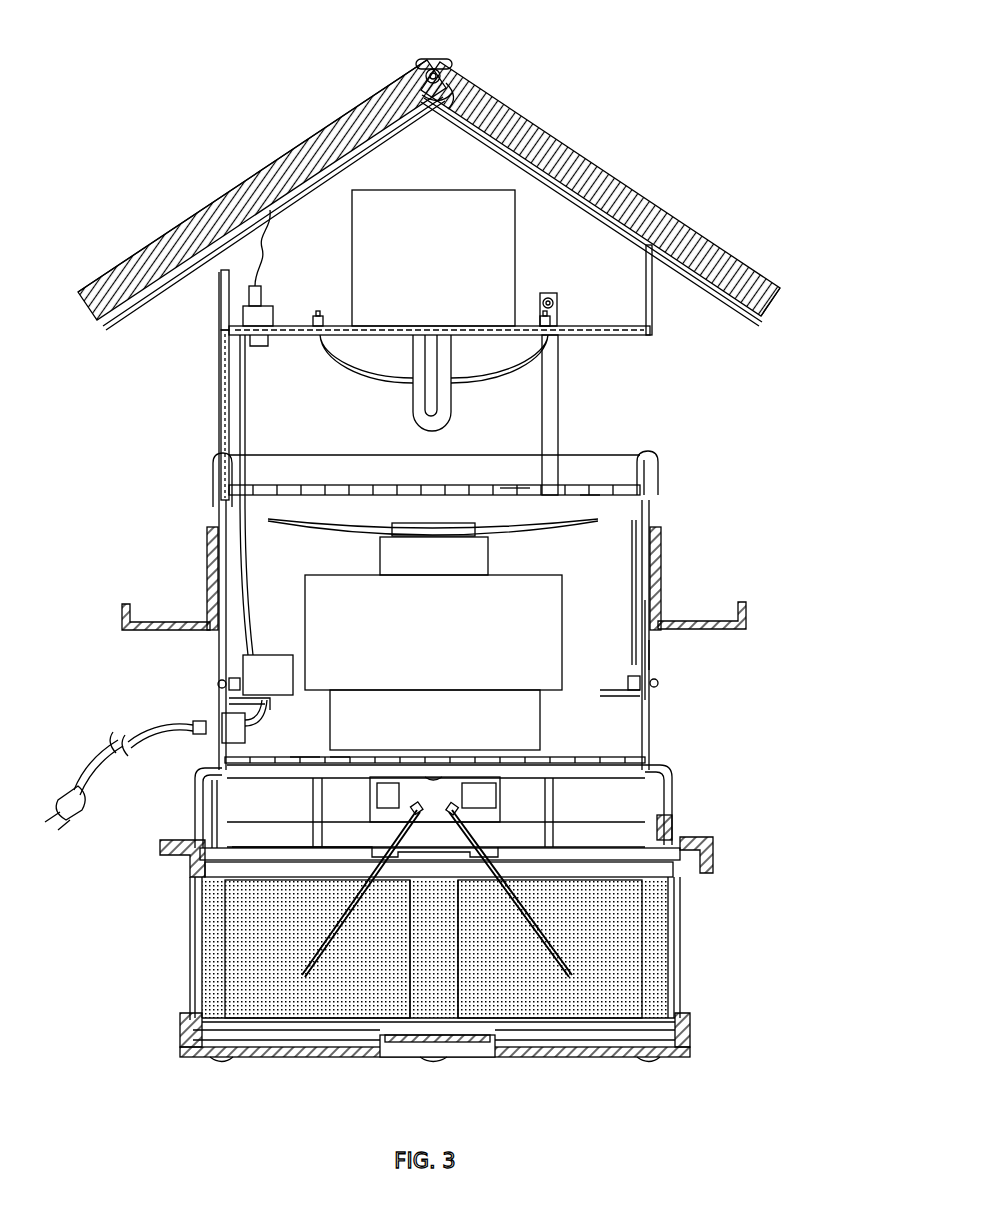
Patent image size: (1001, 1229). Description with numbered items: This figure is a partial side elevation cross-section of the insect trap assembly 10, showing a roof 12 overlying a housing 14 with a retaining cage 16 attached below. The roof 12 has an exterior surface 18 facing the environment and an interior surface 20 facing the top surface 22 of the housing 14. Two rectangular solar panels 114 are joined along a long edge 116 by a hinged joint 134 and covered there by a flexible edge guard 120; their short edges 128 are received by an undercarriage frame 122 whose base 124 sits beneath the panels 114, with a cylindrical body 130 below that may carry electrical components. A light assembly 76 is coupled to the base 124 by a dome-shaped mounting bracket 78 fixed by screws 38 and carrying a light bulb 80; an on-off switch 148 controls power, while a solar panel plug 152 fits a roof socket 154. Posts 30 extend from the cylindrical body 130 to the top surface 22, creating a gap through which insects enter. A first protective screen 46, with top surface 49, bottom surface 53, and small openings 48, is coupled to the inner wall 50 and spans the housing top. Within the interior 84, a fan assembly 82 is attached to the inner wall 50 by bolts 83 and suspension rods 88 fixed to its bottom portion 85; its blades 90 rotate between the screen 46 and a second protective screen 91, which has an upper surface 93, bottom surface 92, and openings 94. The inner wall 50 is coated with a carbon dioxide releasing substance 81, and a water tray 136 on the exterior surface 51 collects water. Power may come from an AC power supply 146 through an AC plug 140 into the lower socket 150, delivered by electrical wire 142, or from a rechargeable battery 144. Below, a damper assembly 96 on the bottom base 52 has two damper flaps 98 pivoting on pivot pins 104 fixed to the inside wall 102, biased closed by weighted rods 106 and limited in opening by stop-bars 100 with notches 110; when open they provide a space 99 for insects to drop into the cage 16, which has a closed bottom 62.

The insect trap assembly 10 is at (130, 95).
The roof 12 is at (735, 95).
The housing 14 is at (784, 634).
The retaining cage 16 is at (695, 948).
The exterior surface 18 is at (252, 158).
The interior surface 20 is at (305, 385).
The top surface 22 is at (455, 484).
The posts 30 is at (222, 368).
The screws 38 is at (323, 326).
The first protective screen 46 is at (618, 455).
The openings 48 is at (340, 488).
The top surface 49 is at (524, 484).
The inner wall 50 is at (646, 665).
The exterior surface 51 is at (657, 655).
The bottom base 52 is at (704, 818).
The bottom surface 53 is at (603, 498).
The closed bottom 62 is at (508, 1080).
The light assembly 76 is at (422, 258).
The mounting bracket 78 is at (487, 336).
The light bulb 80 is at (452, 398).
The carbon dioxide releasing substance 81 is at (240, 620).
The fan assembly 82 is at (422, 638).
The bolts 83 is at (225, 685).
The interior 84 is at (677, 575).
The bottom portion 85 is at (422, 731).
The suspension rods 88 is at (232, 705).
The blades 90 is at (350, 528).
The second protective screen 91 is at (605, 752).
The bottom surface 92 is at (630, 772).
The upper surface 93 is at (300, 757).
The openings 94 is at (335, 757).
The damper assembly 96 is at (450, 890).
The damper flaps 98 is at (368, 948).
The space 99 is at (293, 872).
The stop-bars 100 is at (357, 793).
The inside wall 102 is at (205, 805).
The pivot pins 104 is at (392, 850).
The weighted rods 106 is at (435, 799).
The notch 110 is at (378, 808).
The panels 114 is at (143, 266).
The long edge 116 is at (425, 56).
The flexible edge guard 120 is at (457, 58).
The undercarriage frame 122 is at (660, 320).
The base 124 is at (722, 303).
The short edges 128 is at (298, 165).
The cylindrical body 130 is at (652, 292).
The hinged joint 134 is at (490, 100).
The water tray 136 is at (130, 614).
The AC plug 140 is at (195, 724).
The electrical wire 142 is at (225, 445).
The rechargeable battery 144 is at (253, 687).
The AC power supply 146 is at (70, 790).
The on-off switch 148 is at (258, 346).
The lower socket 150 is at (232, 738).
The solar panel plug 152 is at (262, 286).
The roof socket 154 is at (273, 318).